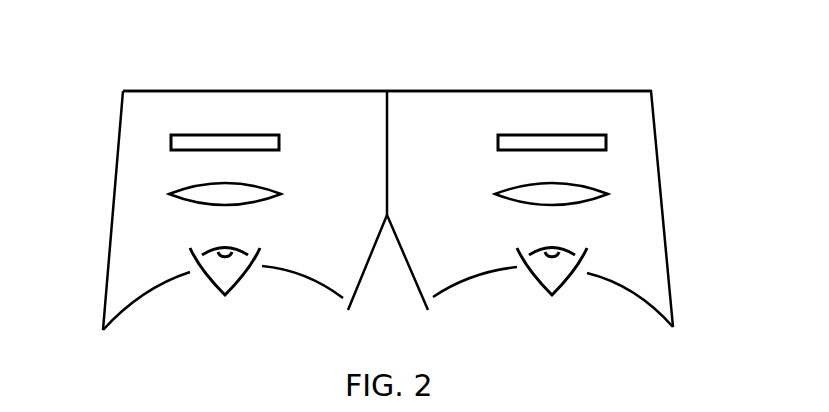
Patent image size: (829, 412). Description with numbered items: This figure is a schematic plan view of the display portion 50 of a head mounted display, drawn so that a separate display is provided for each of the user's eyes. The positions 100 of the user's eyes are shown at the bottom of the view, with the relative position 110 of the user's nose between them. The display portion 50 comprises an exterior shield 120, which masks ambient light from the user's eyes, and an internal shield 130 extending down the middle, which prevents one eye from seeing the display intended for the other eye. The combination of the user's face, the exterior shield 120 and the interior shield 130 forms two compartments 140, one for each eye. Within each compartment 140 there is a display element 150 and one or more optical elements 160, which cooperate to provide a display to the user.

The display portion 50 is at (638, 90).
The positions of the user's eyes 100 is at (230, 283).
The relative position of the user's nose 110 is at (410, 258).
The exterior shield 120 is at (458, 89).
The internal shield 130 is at (388, 153).
The compartments 140 is at (292, 63).
The display element 150 is at (187, 140).
The optical elements 160 is at (165, 195).